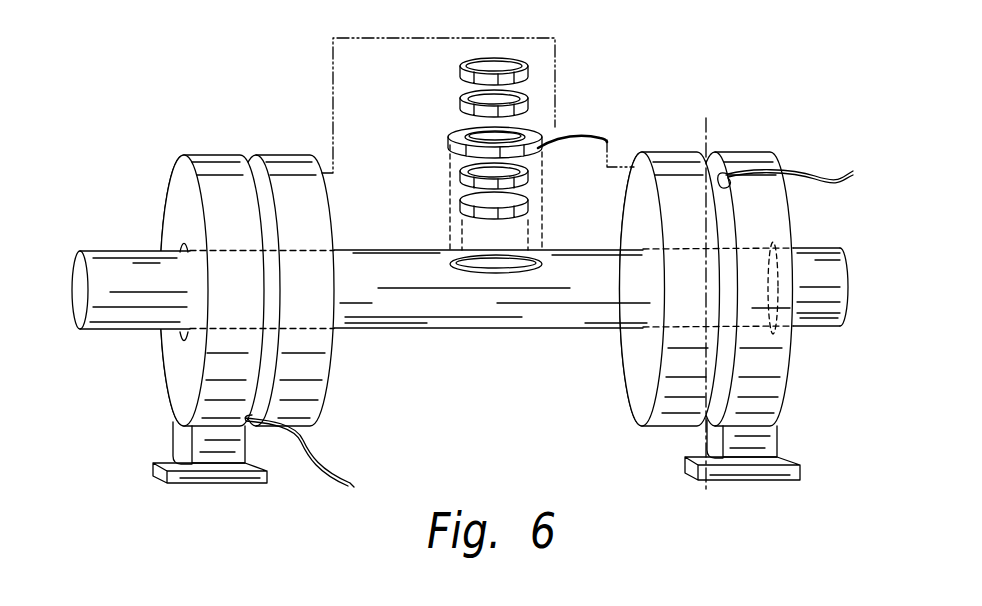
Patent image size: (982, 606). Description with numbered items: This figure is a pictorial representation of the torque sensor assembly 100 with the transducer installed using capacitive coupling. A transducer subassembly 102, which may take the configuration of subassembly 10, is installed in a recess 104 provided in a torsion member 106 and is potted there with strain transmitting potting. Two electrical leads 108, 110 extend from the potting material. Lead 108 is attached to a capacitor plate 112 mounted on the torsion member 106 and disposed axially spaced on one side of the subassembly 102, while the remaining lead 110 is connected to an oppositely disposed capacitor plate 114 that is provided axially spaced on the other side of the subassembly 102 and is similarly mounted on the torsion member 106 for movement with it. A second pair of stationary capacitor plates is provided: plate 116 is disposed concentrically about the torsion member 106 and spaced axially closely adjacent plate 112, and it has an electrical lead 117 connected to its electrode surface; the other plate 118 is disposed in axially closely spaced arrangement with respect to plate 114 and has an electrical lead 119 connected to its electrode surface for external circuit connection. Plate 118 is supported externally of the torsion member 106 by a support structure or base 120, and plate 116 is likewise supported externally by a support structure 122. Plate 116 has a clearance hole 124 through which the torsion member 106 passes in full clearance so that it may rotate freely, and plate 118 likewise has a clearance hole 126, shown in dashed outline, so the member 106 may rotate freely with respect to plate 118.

The transducer subassembly 10 is at (668, 493).
The torque sensor assembly 100 is at (183, 56).
The transducer subassembly 102 is at (437, 57).
The recess 104 is at (493, 268).
The torsion member 106 is at (553, 310).
The electrical lead 108 is at (540, 134).
The electrical lead 110 is at (584, 142).
The capacitor plate 112 is at (278, 154).
The capacitor plate 114 is at (619, 377).
The stationary capacitor plate 116 is at (168, 388).
The electrical lead 117 is at (318, 463).
The stationary capacitor plate 118 is at (793, 358).
The electrical lead 119 is at (824, 172).
The support structure or base 120 is at (777, 447).
The support structure 122 is at (180, 448).
The clearance hole 124 is at (188, 297).
The clearance hole 126 is at (784, 283).